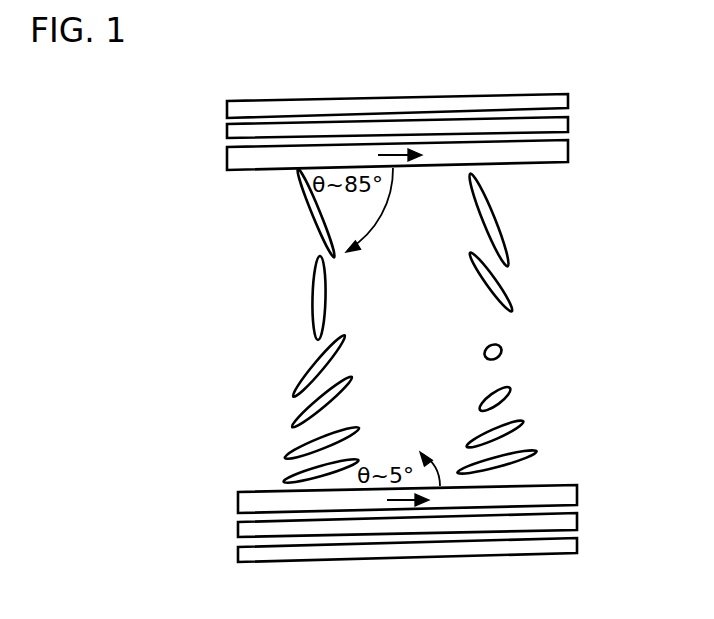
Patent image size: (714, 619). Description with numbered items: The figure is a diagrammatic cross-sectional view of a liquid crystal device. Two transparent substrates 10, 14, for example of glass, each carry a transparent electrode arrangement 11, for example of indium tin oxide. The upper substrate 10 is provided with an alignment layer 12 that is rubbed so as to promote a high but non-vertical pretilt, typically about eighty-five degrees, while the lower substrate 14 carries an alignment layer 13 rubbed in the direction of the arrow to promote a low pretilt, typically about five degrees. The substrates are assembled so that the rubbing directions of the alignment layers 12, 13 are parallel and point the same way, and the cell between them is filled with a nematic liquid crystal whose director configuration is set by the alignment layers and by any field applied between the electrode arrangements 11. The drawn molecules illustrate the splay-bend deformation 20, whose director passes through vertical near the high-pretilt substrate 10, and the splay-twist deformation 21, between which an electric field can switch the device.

The upper transparent substrate 10 is at (568, 101).
The transparent electrode arrangements 11 is at (568, 125).
The alignment layer 12 is at (568, 151).
The alignment layer 13 is at (577, 494).
The lower transparent substrate 14 is at (577, 546).
The splay-bend deformation 20 is at (281, 307).
The splay-twist deformation 21 is at (525, 340).